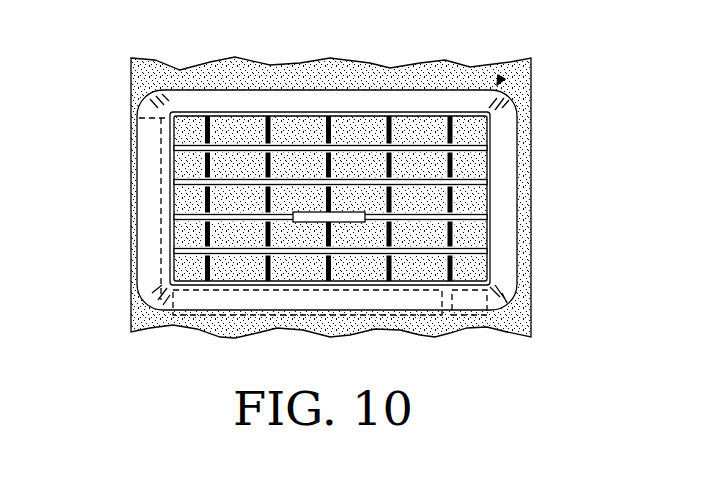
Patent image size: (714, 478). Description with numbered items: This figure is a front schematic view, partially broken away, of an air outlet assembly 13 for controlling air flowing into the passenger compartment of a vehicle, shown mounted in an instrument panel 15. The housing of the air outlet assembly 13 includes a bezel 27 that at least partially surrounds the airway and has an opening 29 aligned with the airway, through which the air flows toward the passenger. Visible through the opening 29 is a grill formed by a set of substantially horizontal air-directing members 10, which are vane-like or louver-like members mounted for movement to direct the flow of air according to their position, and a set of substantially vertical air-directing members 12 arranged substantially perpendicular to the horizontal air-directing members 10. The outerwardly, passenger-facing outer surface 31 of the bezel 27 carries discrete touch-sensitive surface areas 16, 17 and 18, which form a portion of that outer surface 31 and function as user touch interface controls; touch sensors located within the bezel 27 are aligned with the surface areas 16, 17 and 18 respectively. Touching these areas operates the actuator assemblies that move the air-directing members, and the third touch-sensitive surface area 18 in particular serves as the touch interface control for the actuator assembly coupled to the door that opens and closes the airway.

The horizontal air-directing member 10 is at (468, 253).
The vertical air-directing member 12 is at (213, 130).
The air outlet assembly 13 is at (497, 85).
The instrument panel 15 is at (523, 318).
The touch-sensitive surface area 16 is at (220, 315).
The touch-sensitive surface area 17 is at (131, 170).
The touch-sensitive surface area 18 is at (470, 322).
The bezel 27 is at (217, 90).
The opening 29 is at (198, 118).
The outer surface 31 is at (468, 100).